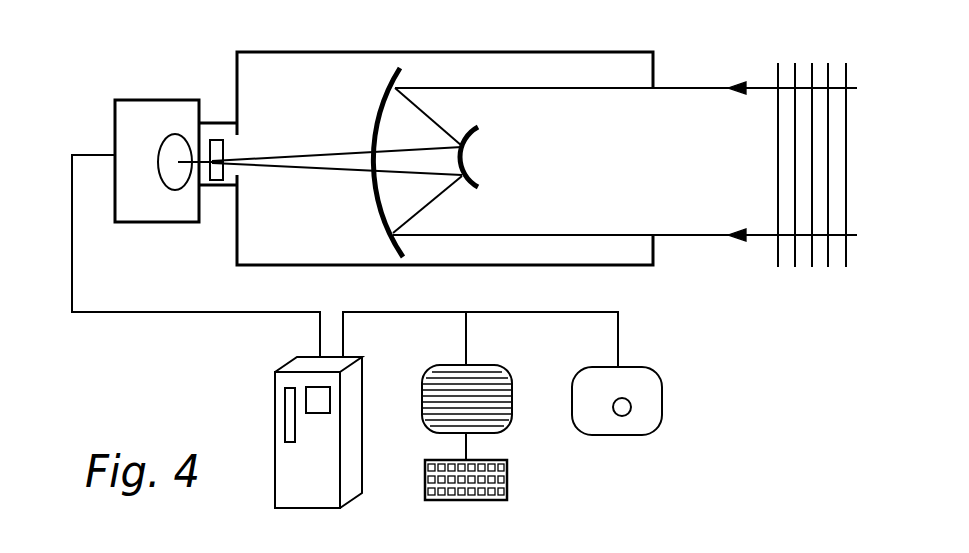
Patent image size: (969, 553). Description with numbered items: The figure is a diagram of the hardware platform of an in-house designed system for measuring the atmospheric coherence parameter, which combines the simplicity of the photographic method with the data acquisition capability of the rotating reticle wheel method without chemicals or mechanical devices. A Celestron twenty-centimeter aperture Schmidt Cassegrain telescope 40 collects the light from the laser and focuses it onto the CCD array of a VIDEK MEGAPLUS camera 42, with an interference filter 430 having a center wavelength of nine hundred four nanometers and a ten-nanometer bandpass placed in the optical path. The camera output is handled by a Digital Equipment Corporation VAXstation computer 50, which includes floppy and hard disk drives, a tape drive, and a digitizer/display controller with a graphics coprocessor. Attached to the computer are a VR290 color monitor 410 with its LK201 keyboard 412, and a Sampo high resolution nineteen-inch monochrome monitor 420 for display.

The telescope 40 is at (543, 52).
The camera 42 is at (115, 123).
The interference filter 430 is at (217, 140).
The computer 50 is at (275, 430).
The color monitor 410 is at (422, 380).
The keyboard 412 is at (507, 482).
The monochrome monitor 420 is at (662, 380).